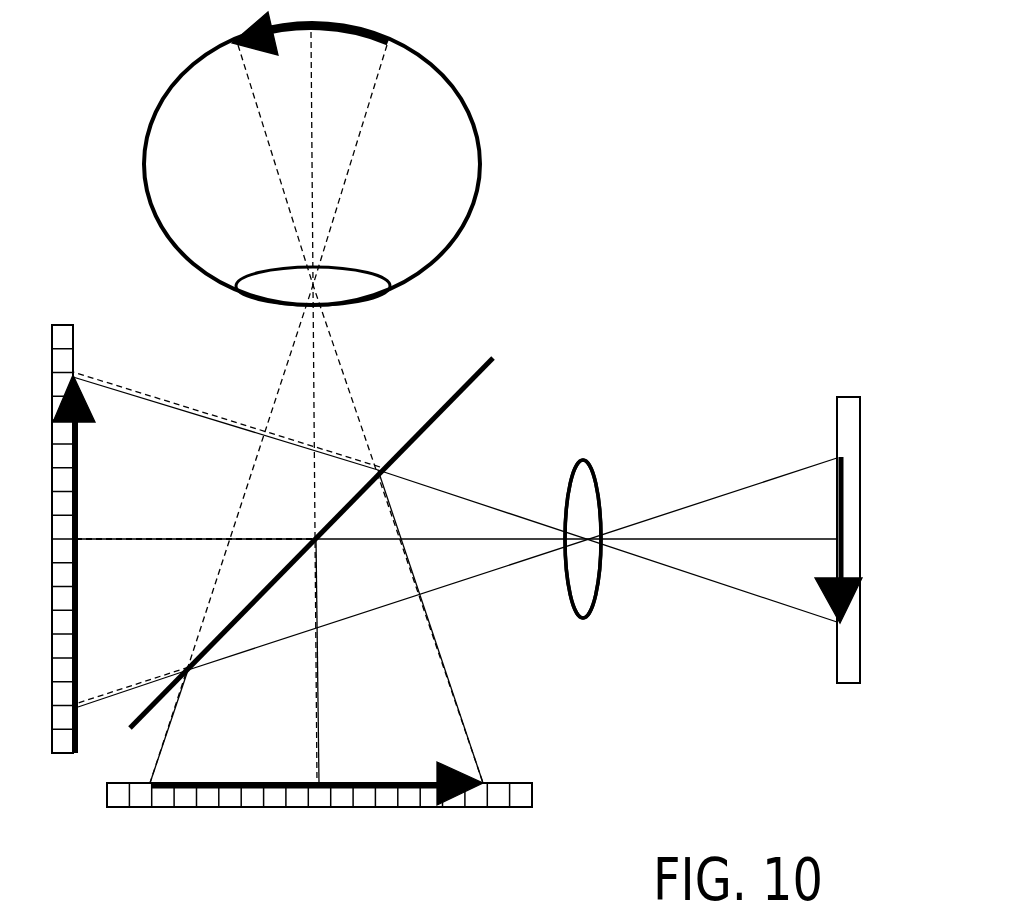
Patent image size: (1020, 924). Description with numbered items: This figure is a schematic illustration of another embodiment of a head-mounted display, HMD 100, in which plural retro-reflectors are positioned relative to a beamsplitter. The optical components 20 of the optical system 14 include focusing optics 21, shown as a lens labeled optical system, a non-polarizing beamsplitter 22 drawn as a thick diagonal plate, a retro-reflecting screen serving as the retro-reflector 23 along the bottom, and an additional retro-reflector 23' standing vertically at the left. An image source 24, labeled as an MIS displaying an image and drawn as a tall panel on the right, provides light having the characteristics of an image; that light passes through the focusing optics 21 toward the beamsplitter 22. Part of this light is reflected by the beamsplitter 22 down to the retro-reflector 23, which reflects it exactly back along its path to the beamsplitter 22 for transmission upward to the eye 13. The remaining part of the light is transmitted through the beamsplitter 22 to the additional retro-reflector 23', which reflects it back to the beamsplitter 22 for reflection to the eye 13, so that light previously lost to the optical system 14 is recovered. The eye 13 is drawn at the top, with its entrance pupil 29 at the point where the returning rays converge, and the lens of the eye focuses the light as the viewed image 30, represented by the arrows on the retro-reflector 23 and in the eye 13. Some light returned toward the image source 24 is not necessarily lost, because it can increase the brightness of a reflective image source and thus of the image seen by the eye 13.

The eye 13 is at (478, 132).
The pupil and lens of the eye 29 is at (357, 305).
The HMD 100 is at (670, 283).
The beamsplitter 22 is at (420, 437).
The optical components 20 is at (610, 465).
The focusing optics 21 is at (612, 588).
The optical system 14 is at (724, 436).
The image source 24 is at (837, 410).
The retro-reflector 23 is at (328, 794).
The additional retro-reflector 23' is at (69, 574).
The viewed image 30 is at (355, 783).